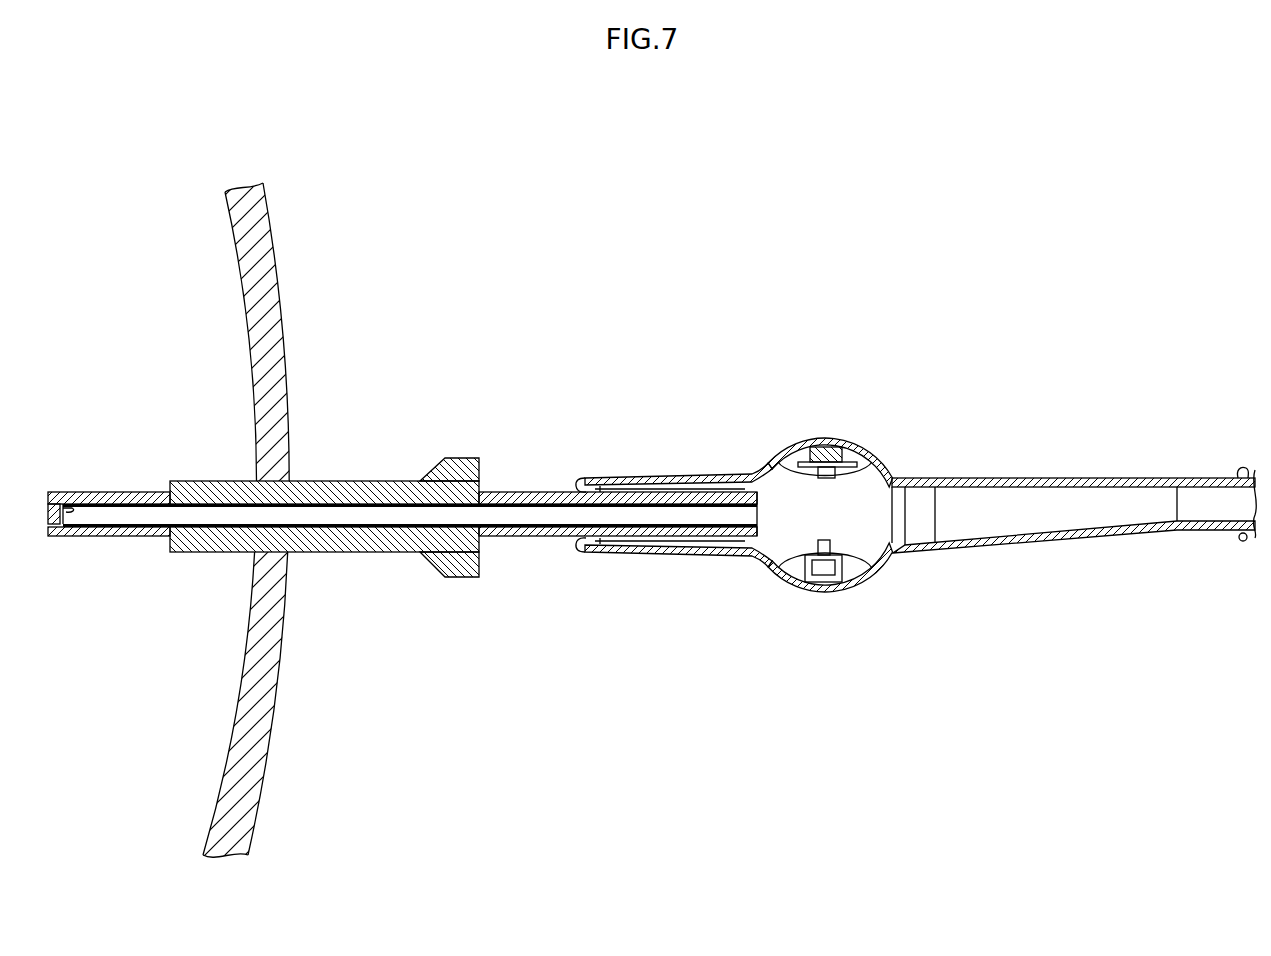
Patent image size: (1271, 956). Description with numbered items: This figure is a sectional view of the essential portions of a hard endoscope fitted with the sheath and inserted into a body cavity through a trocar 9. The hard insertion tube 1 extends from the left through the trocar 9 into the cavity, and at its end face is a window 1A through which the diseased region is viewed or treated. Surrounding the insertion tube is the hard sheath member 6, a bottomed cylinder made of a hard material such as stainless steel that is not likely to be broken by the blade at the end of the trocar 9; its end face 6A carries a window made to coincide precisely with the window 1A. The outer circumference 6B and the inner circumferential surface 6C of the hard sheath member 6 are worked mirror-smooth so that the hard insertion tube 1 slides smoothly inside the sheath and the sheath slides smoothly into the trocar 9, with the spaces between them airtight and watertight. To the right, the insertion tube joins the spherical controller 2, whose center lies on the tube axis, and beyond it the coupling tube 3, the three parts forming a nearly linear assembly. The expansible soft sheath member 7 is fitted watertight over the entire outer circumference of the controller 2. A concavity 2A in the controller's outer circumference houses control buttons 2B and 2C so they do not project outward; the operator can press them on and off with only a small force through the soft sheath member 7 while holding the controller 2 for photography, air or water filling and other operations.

The hard insertion tube 1 is at (500, 519).
The window 1A is at (47, 512).
The controller 2 is at (876, 549).
The concavity 2A is at (818, 438).
The control button 2B is at (843, 441).
The control button 2C is at (828, 590).
The coupling tube 3 is at (1035, 530).
The hard sheath member 6 is at (382, 490).
The end face 6A is at (46, 524).
The outer circumference 6B is at (556, 492).
The inner circumferential surface 6C is at (557, 537).
The soft sheath member 7 is at (700, 476).
The trocar 9 is at (463, 458).